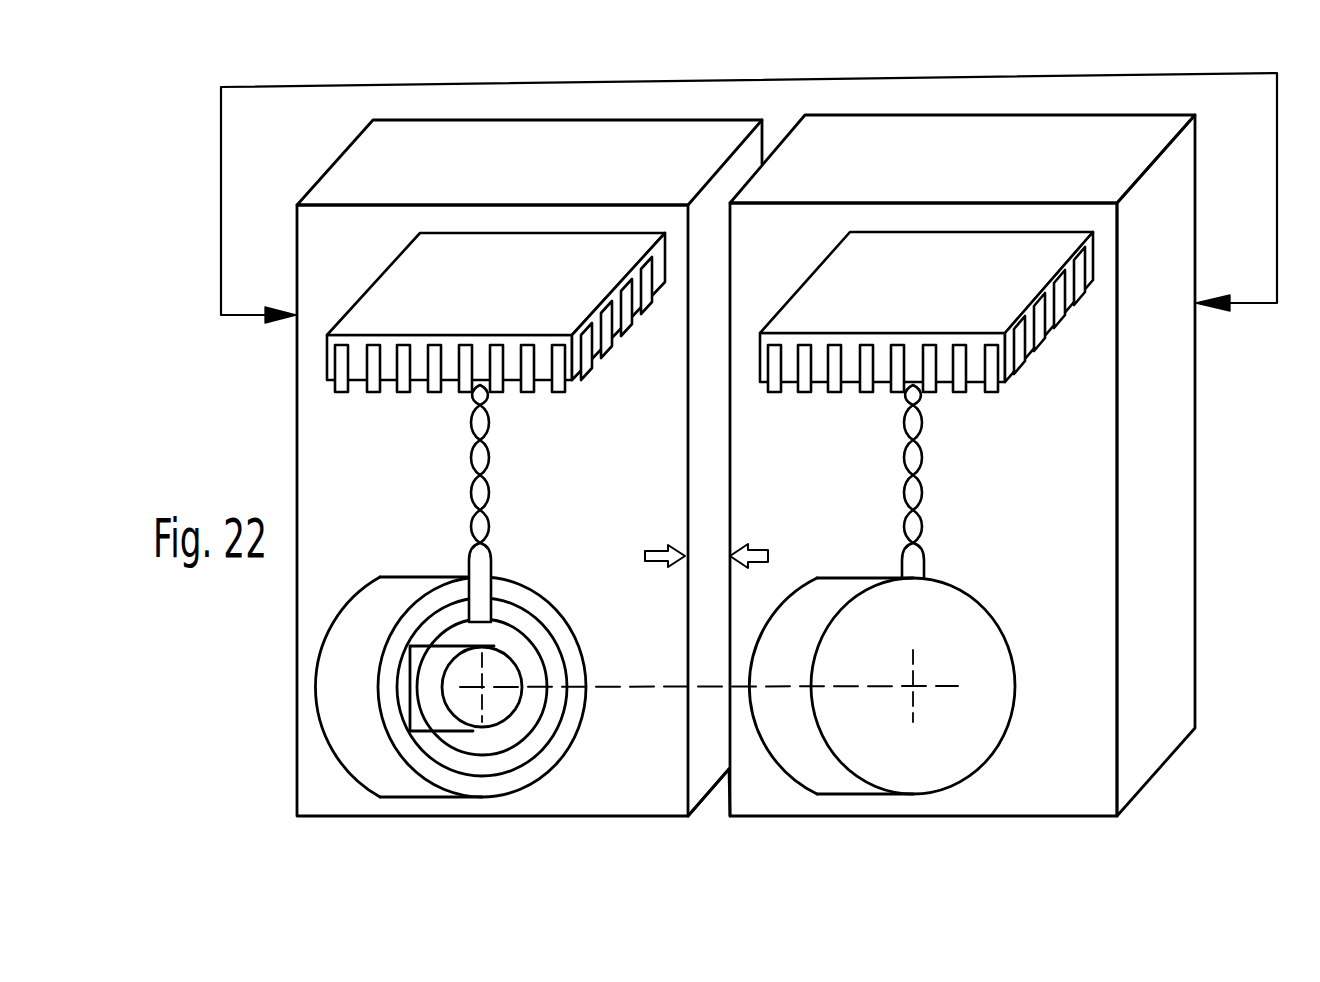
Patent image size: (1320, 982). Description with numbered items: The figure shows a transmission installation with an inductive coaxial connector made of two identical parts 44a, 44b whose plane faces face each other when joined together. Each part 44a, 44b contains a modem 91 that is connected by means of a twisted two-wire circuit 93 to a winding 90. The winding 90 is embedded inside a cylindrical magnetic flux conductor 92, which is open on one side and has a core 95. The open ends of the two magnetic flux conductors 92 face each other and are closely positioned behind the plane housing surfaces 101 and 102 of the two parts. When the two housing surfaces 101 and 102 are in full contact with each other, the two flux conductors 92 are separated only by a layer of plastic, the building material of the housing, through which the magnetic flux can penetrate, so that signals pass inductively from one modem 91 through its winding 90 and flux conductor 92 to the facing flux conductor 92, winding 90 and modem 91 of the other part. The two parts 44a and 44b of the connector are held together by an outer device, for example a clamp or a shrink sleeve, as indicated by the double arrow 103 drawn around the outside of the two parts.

The part of the connector 44a is at (1172, 553).
The part of the connector 44b is at (307, 427).
The winding 90 is at (508, 628).
The modem 91 is at (510, 308).
The cylindrical magnetic flux conductor 92 is at (316, 687).
The twisted two-wire circuit 93 is at (490, 495).
The core 95 is at (498, 672).
The plane housing surface 101 is at (697, 747).
The plane housing surface 102 is at (723, 795).
The double arrow 103 is at (218, 130).